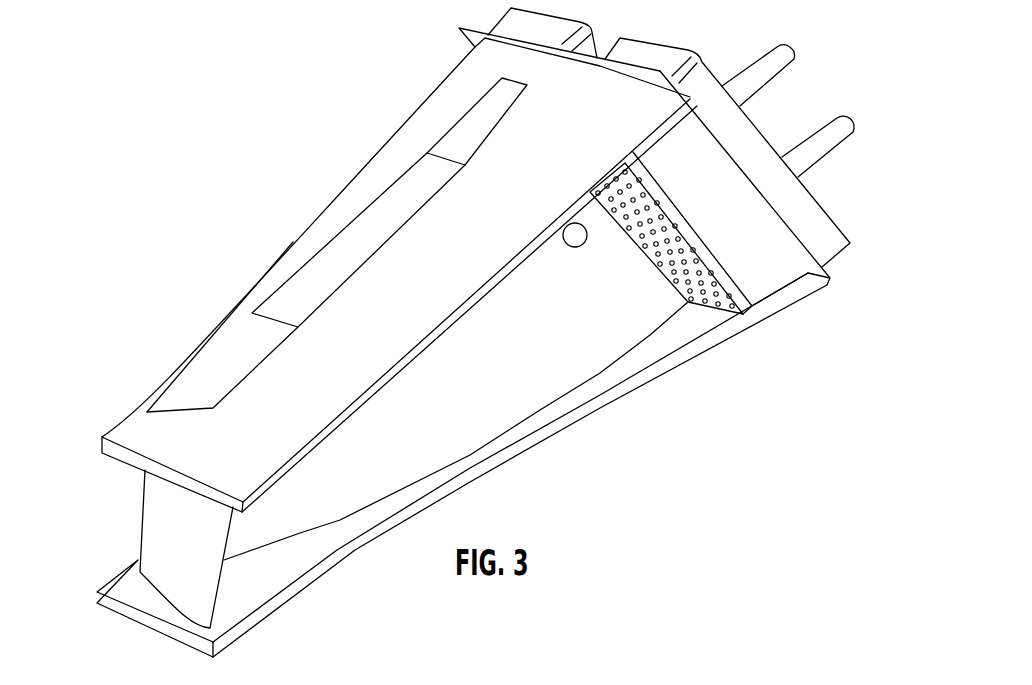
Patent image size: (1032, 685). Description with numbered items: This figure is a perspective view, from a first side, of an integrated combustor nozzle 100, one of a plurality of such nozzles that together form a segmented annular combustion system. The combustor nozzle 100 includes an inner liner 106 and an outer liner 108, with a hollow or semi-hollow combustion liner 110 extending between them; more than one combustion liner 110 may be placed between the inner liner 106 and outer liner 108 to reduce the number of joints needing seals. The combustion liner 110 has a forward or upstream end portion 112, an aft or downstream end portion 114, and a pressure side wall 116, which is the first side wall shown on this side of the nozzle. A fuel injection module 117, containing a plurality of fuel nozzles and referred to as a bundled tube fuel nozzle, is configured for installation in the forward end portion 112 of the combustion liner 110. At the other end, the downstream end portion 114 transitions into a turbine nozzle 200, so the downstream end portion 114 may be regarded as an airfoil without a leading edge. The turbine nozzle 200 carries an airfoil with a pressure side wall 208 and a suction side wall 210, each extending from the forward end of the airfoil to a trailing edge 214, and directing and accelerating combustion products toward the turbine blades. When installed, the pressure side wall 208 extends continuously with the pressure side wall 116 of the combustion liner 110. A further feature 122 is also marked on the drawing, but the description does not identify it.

The integrated combustor nozzle 100 is at (178, 238).
The inner liner 106 is at (495, 465).
The outer liner 108 is at (272, 270).
The combustion liner 110 is at (552, 390).
The forward end portion 112 is at (640, 237).
The downstream end portion 114 is at (214, 581).
The pressure side wall 116 is at (595, 305).
The fuel injection module 117 is at (720, 165).
The cooling hole 122 is at (567, 246).
The turbine nozzle 200 is at (212, 538).
The pressure side wall 208 is at (248, 535).
The suction side wall 210 is at (158, 502).
The trailing edge 214 is at (212, 610).